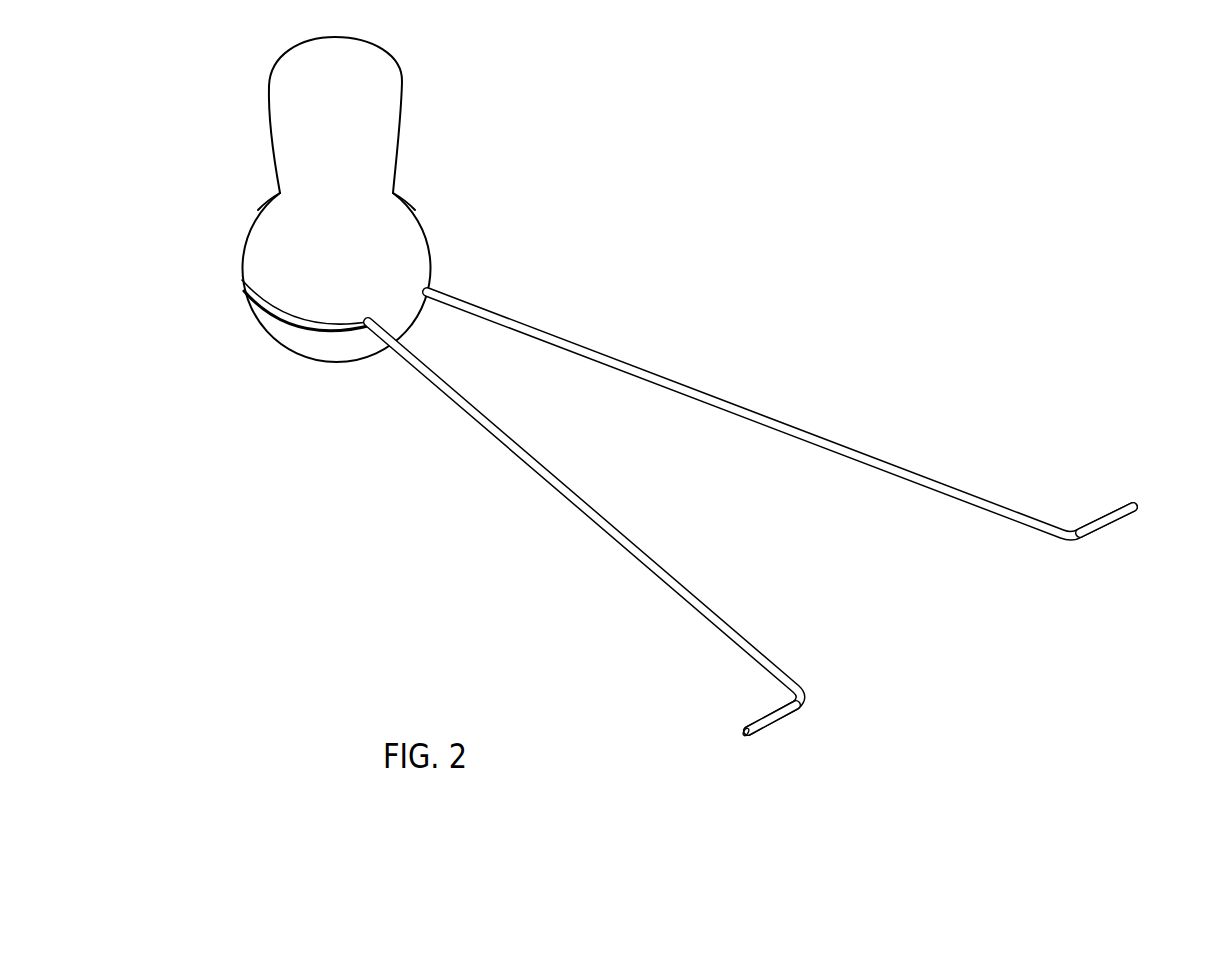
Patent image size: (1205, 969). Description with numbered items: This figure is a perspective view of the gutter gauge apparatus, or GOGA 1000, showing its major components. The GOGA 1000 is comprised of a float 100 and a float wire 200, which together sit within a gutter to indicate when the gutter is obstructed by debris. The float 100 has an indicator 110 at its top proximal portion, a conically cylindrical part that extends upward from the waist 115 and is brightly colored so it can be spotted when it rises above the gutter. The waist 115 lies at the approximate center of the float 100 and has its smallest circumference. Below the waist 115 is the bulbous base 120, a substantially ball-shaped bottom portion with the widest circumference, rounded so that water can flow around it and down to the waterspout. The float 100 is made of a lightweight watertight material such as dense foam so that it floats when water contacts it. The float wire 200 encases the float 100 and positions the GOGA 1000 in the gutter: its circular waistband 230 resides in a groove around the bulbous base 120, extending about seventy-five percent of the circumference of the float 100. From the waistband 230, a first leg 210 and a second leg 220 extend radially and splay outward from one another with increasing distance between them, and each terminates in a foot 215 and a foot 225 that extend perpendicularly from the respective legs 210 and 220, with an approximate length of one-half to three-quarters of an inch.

The gutter gauge apparatus (GOGA) 1000 is at (574, 188).
The float 100 is at (218, 208).
The indicator 110 is at (272, 145).
The waist 115 is at (395, 193).
The bulbous base 120 is at (275, 342).
The waistband 230 is at (242, 283).
The float wire 200 is at (524, 512).
The first leg 210 is at (800, 430).
The foot 215 is at (1108, 513).
The second leg 220 is at (650, 550).
The foot 225 is at (762, 713).